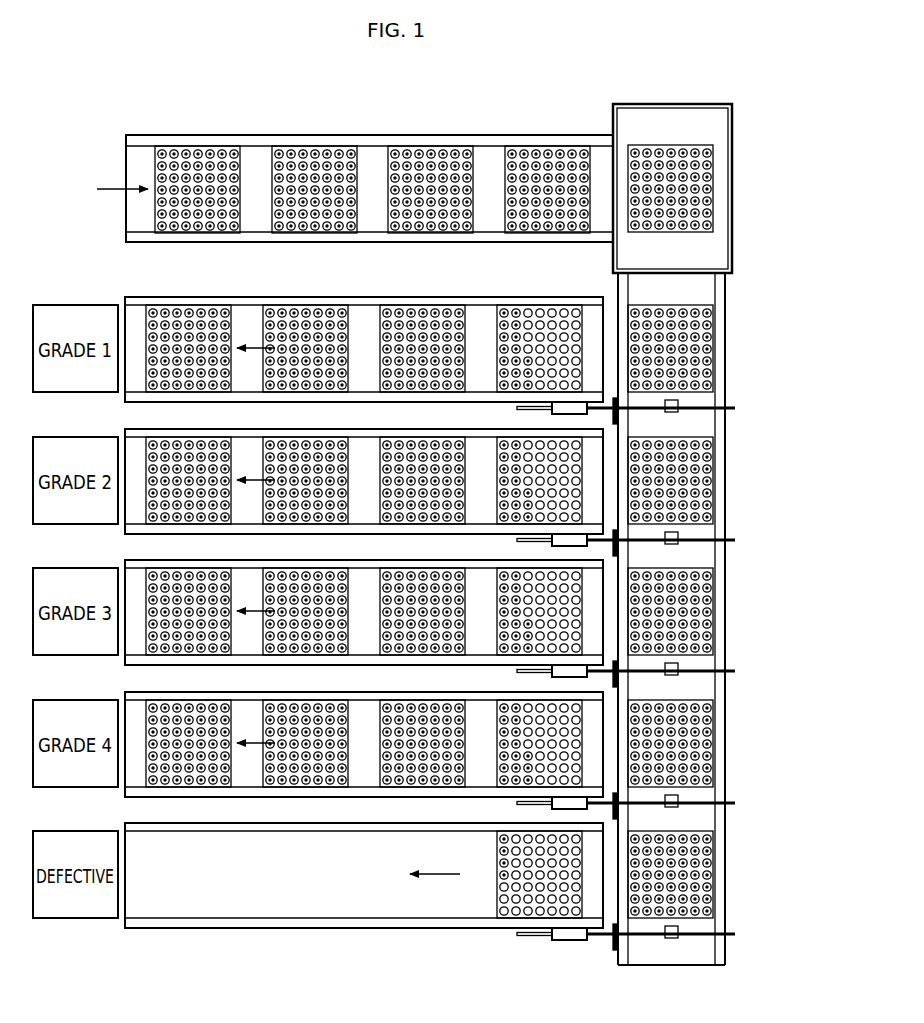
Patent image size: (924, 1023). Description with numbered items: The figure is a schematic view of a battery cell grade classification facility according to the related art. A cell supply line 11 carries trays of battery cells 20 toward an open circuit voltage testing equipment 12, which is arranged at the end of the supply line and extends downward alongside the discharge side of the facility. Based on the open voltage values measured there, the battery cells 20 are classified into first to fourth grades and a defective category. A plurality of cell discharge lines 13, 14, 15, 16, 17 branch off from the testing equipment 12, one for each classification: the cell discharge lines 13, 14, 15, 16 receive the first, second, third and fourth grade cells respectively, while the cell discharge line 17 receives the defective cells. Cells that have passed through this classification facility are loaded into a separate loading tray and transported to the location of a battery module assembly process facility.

The cell supply line 11 is at (383, 132).
The open circuit voltage testing equipment 12 is at (720, 147).
The cell discharge line 13 is at (127, 297).
The cell discharge line 14 is at (127, 429).
The cell discharge line 15 is at (127, 560).
The cell discharge line 16 is at (127, 692).
The cell discharge line 17 is at (127, 823).
The battery cell 20 is at (300, 150).